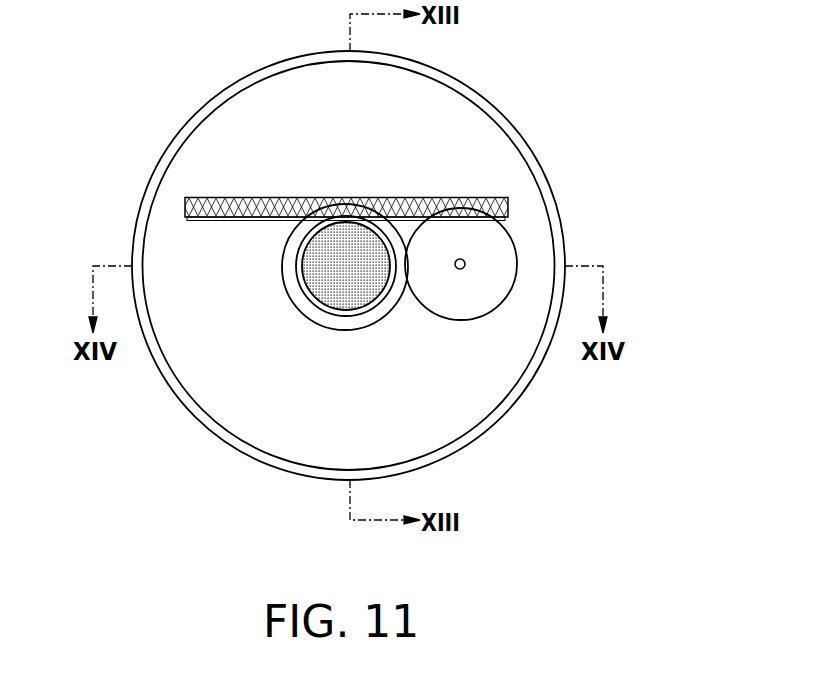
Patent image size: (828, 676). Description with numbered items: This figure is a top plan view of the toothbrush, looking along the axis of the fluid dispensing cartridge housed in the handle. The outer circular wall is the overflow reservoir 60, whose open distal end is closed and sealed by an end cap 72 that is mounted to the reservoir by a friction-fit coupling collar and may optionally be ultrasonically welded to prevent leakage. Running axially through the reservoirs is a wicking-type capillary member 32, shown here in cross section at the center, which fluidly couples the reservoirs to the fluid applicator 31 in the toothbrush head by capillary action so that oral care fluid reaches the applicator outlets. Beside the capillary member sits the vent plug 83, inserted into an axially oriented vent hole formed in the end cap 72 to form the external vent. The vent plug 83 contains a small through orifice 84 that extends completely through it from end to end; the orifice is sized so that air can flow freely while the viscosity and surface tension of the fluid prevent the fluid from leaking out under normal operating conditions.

The overflow reservoir 60 is at (472, 87).
The end cap 72 is at (260, 395).
The fluid applicator 31 is at (487, 197).
The capillary member 32 is at (302, 245).
The vent plug 83 is at (480, 318).
The through orifice 84 is at (466, 262).